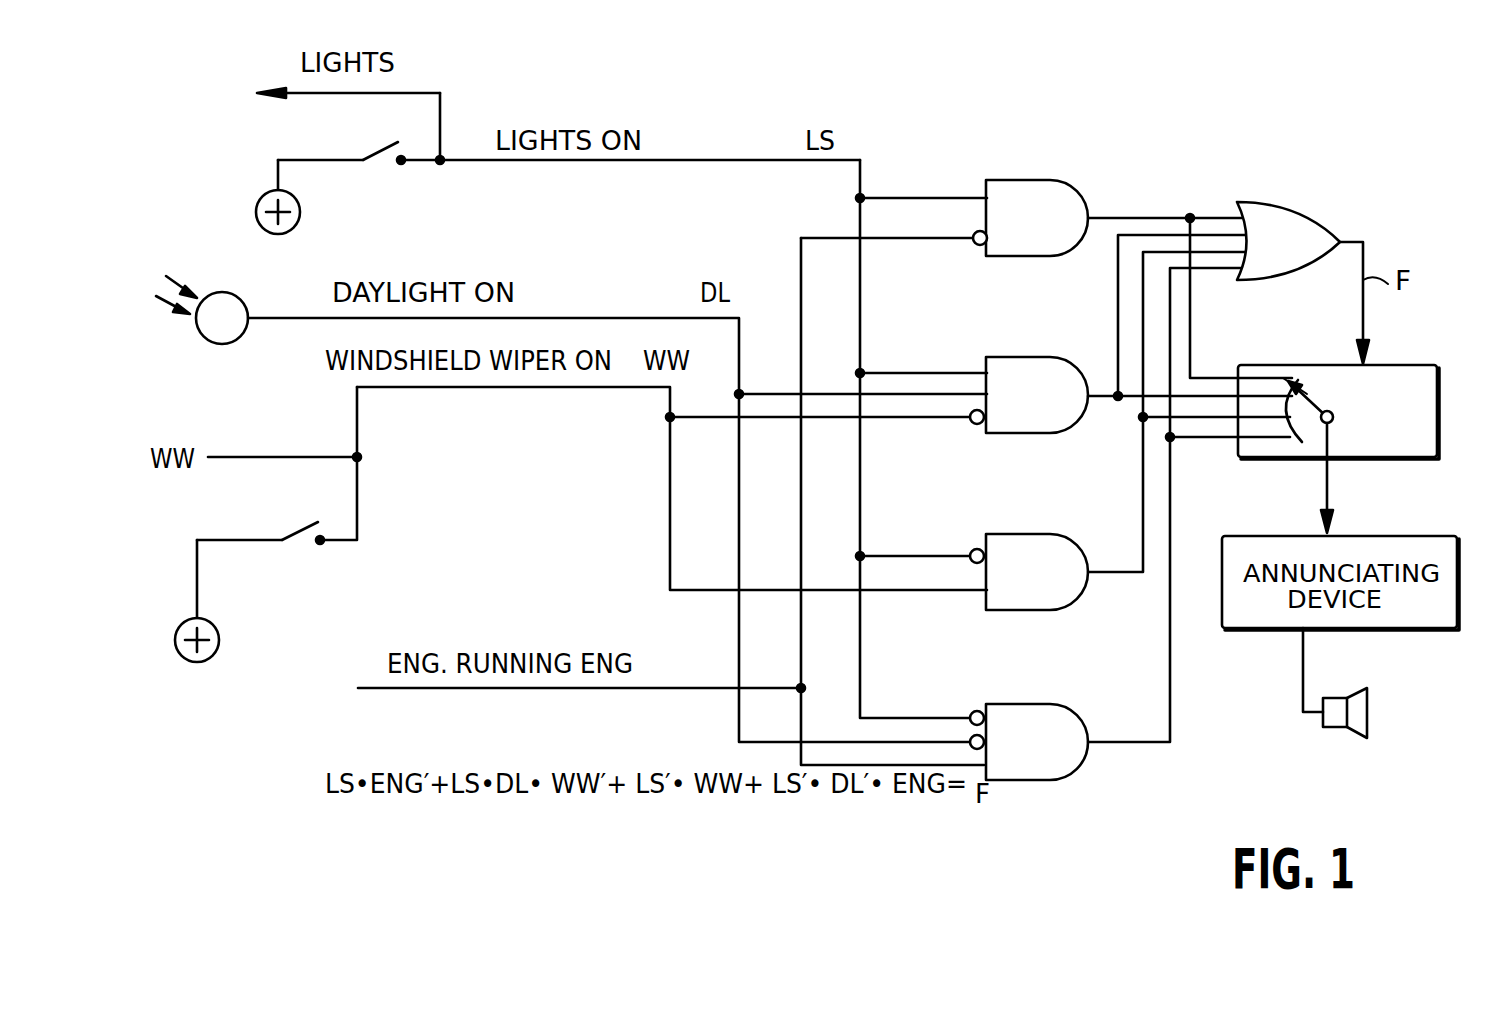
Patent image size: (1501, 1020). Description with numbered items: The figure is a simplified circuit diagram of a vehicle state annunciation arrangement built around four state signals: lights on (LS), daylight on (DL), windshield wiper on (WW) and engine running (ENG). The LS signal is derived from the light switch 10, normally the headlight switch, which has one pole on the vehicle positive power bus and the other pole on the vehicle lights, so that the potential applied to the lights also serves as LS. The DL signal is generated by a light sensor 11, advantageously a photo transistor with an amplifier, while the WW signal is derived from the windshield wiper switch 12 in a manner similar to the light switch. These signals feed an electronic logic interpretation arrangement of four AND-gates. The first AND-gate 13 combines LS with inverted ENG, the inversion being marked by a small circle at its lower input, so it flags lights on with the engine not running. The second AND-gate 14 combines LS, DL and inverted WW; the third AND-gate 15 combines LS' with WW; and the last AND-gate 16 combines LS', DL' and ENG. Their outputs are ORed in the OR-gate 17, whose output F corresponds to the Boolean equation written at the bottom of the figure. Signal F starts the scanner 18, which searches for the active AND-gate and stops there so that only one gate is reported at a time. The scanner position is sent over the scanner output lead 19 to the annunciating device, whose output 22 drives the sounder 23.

The light switch 10 is at (383, 162).
The light sensor 11 is at (205, 341).
The windshield wiper switch 12 is at (300, 545).
The first AND-gate 13 is at (1054, 184).
The second AND-gate 14 is at (1050, 359).
The third AND-gate 15 is at (1052, 536).
The last AND-gate 16 is at (1052, 707).
The OR-gate 17 is at (1310, 210).
The scanner 18 is at (1413, 447).
The scanner output lead 19 is at (1325, 486).
The output 22 is at (1303, 652).
The sounder 23 is at (1367, 713).